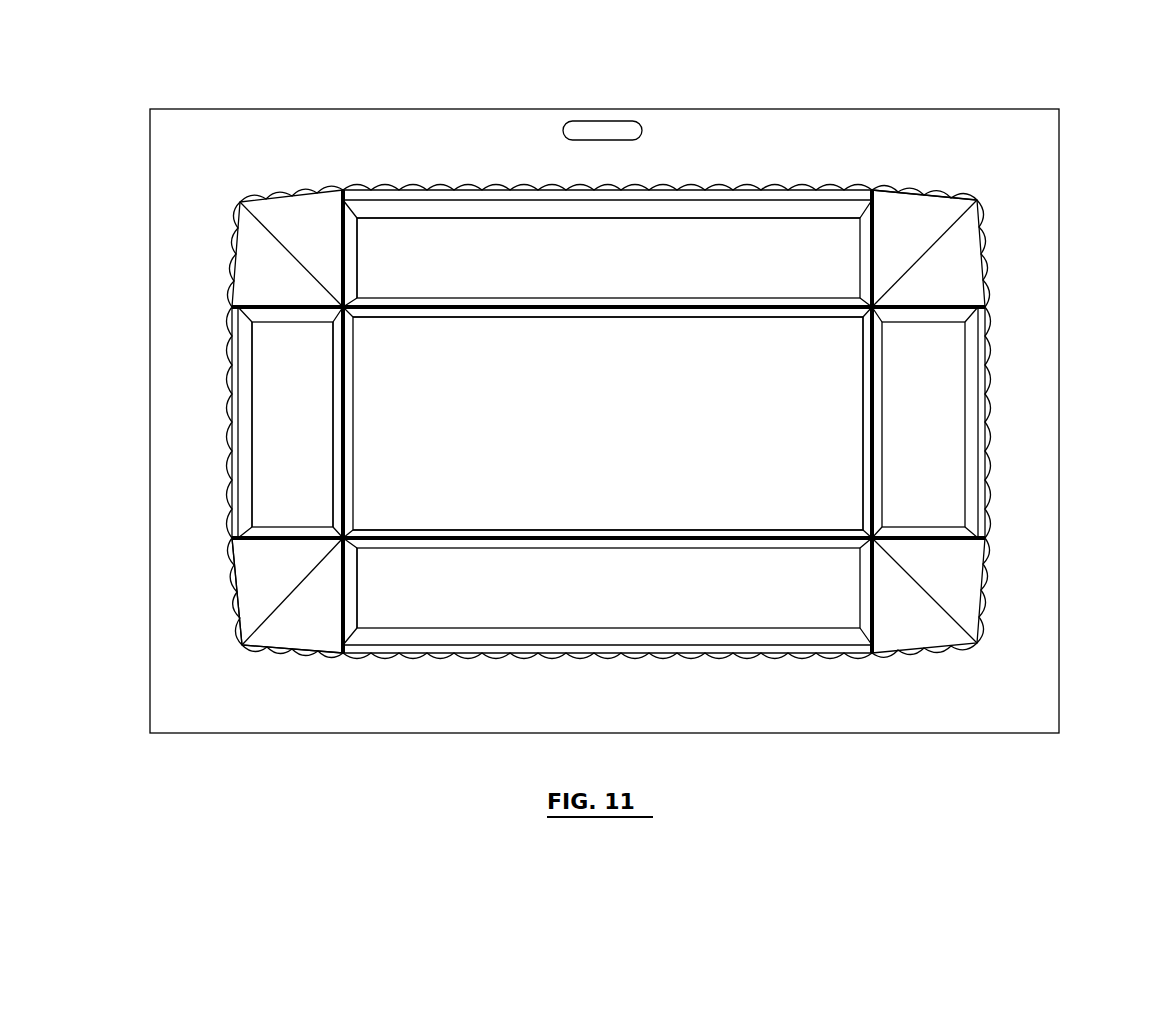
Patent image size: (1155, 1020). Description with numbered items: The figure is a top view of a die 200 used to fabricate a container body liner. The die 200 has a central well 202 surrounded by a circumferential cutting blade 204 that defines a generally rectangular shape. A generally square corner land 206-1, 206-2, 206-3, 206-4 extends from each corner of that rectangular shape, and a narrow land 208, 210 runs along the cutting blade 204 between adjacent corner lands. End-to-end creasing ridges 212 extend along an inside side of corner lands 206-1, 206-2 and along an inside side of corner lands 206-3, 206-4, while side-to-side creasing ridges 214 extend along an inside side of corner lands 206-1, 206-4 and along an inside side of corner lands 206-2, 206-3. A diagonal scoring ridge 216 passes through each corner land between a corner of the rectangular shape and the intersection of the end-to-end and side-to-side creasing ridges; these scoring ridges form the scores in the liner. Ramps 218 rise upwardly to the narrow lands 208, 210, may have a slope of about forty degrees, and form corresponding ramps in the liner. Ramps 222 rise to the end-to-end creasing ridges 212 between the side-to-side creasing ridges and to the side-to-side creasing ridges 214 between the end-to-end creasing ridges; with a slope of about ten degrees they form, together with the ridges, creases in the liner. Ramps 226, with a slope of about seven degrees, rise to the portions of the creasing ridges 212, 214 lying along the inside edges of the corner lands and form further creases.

The die 200 is at (676, 132).
The central well 202 is at (627, 433).
The circumferential cutting blade 204 is at (925, 192).
The corner land 206-1 is at (903, 645).
The corner land 206-2 is at (315, 645).
The corner land 206-3 is at (250, 255).
The corner land 206-4 is at (975, 283).
The narrow land 208 is at (228, 408).
The narrow land 210 is at (516, 190).
The end-to-end creasing ridges 212 is at (450, 312).
The side-to-side creasing ridges 214 is at (352, 404).
The diagonal scoring ridge 216 is at (290, 598).
The ramps 218 is at (246, 437).
The ramps 222 is at (585, 297).
The ramps 226 is at (352, 257).